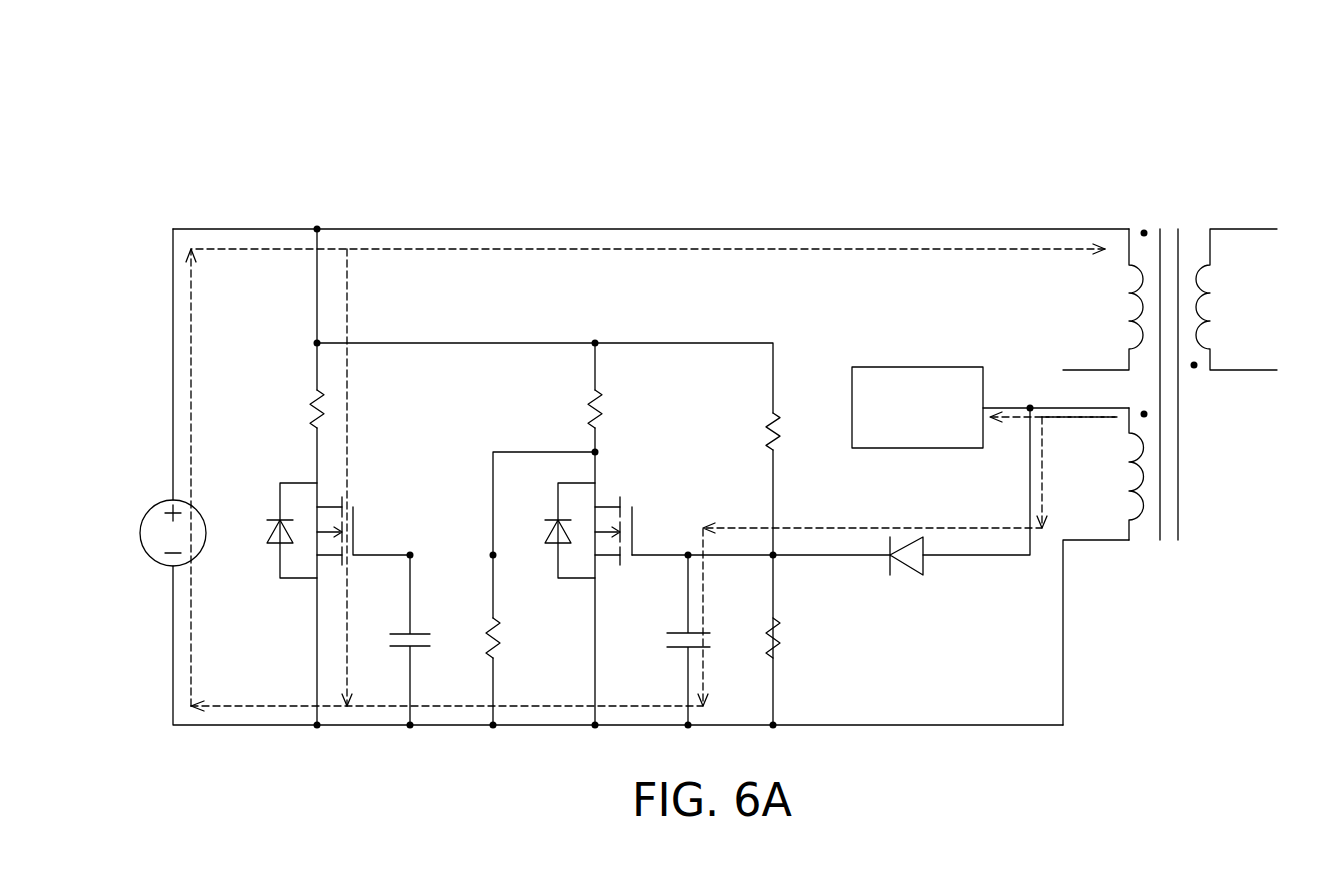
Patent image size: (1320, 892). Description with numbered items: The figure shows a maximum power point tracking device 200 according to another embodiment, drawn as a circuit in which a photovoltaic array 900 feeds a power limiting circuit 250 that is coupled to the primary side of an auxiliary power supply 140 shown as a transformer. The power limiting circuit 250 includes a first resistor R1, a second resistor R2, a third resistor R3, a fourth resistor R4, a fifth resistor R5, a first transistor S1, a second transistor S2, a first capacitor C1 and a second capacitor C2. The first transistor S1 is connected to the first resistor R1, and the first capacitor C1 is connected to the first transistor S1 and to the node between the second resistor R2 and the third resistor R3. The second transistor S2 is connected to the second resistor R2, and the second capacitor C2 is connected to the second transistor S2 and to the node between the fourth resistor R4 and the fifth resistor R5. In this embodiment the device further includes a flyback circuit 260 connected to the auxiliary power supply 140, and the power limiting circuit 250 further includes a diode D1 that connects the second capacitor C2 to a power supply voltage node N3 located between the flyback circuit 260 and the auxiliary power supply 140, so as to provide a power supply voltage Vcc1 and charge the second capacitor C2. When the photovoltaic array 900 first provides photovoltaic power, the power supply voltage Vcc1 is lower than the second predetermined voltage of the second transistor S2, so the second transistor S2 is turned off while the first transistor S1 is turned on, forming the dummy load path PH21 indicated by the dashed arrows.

The maximum power point tracking device 200 is at (1318, 75).
The power limiting circuit 250 is at (688, 200).
The auxiliary power supply 140 is at (1195, 200).
The photovoltaic array 900 is at (150, 512).
The dummy load path PH21 is at (352, 296).
The first resistor R1 is at (300, 409).
The second resistor R2 is at (577, 409).
The third resistor R3 is at (512, 638).
The fourth resistor R4 is at (792, 431).
The fifth resistor R5 is at (790, 638).
The first capacitor C1 is at (427, 640).
The second capacitor C2 is at (706, 640).
The first transistor S1 is at (338, 530).
The second transistor S2 is at (606, 530).
The diode D1 is at (906, 538).
The flyback circuit 260 is at (969, 431).
The power supply voltage node N3 is at (1029, 395).
The power supply voltage Vcc1 is at (1079, 432).